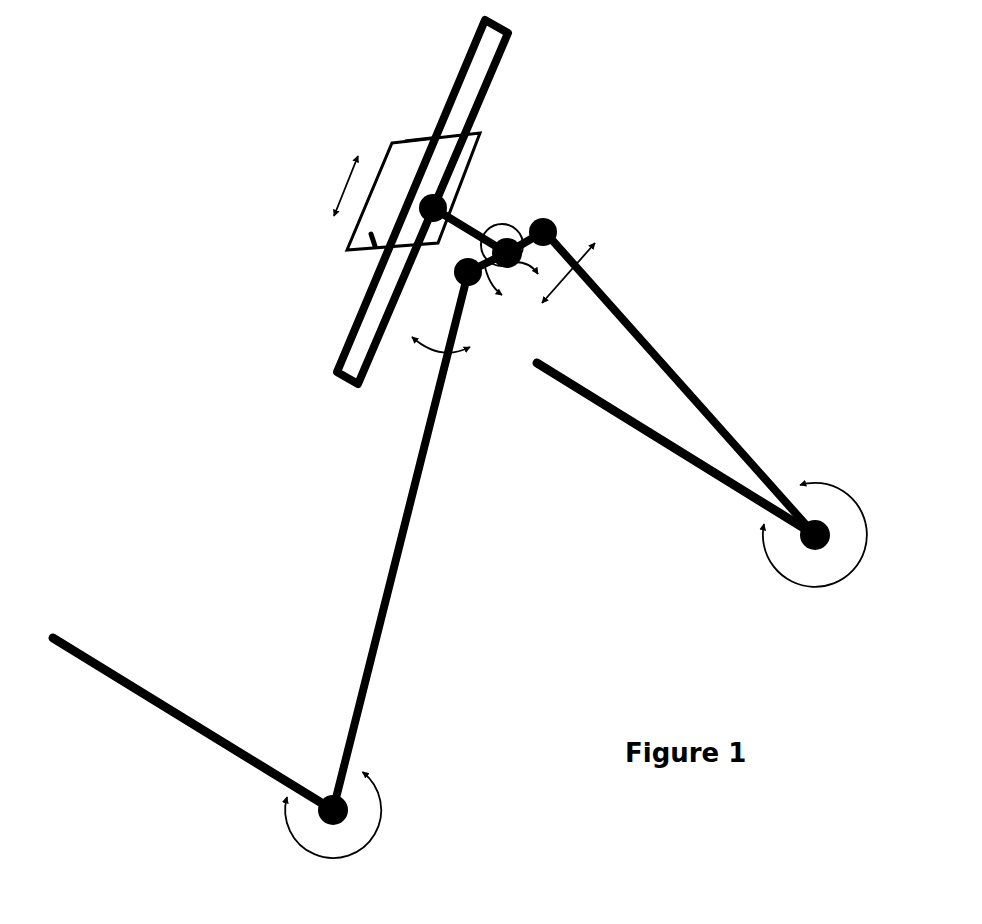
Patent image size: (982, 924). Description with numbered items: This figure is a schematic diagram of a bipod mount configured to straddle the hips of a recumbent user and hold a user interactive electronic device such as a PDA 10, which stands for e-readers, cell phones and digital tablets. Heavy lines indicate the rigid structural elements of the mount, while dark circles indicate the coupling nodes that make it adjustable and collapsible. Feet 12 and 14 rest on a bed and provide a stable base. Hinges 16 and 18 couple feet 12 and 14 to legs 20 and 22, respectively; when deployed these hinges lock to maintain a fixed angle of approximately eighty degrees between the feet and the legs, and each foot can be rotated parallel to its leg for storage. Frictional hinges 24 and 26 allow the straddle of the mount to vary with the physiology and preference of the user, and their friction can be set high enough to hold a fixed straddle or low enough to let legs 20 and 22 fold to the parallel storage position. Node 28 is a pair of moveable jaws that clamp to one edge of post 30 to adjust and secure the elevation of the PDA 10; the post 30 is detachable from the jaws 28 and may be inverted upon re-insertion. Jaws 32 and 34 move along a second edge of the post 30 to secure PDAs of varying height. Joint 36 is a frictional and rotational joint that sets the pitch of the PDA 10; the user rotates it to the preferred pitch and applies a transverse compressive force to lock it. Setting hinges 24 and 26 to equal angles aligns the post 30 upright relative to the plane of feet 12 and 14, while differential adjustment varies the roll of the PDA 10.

The PDA 10 is at (412, 165).
The foot 12 is at (172, 706).
The foot 14 is at (675, 455).
The hinge 16 is at (347, 812).
The hinge 18 is at (803, 550).
The leg 20 is at (372, 683).
The leg 22 is at (640, 332).
The frictional hinge 24 is at (455, 285).
The frictional hinge 26 is at (552, 220).
The moveable jaws 28 is at (446, 199).
The post 30 is at (489, 47).
The jaw 32 is at (372, 250).
The jaw 34 is at (420, 134).
The frictional and rotational joint 36 is at (504, 224).